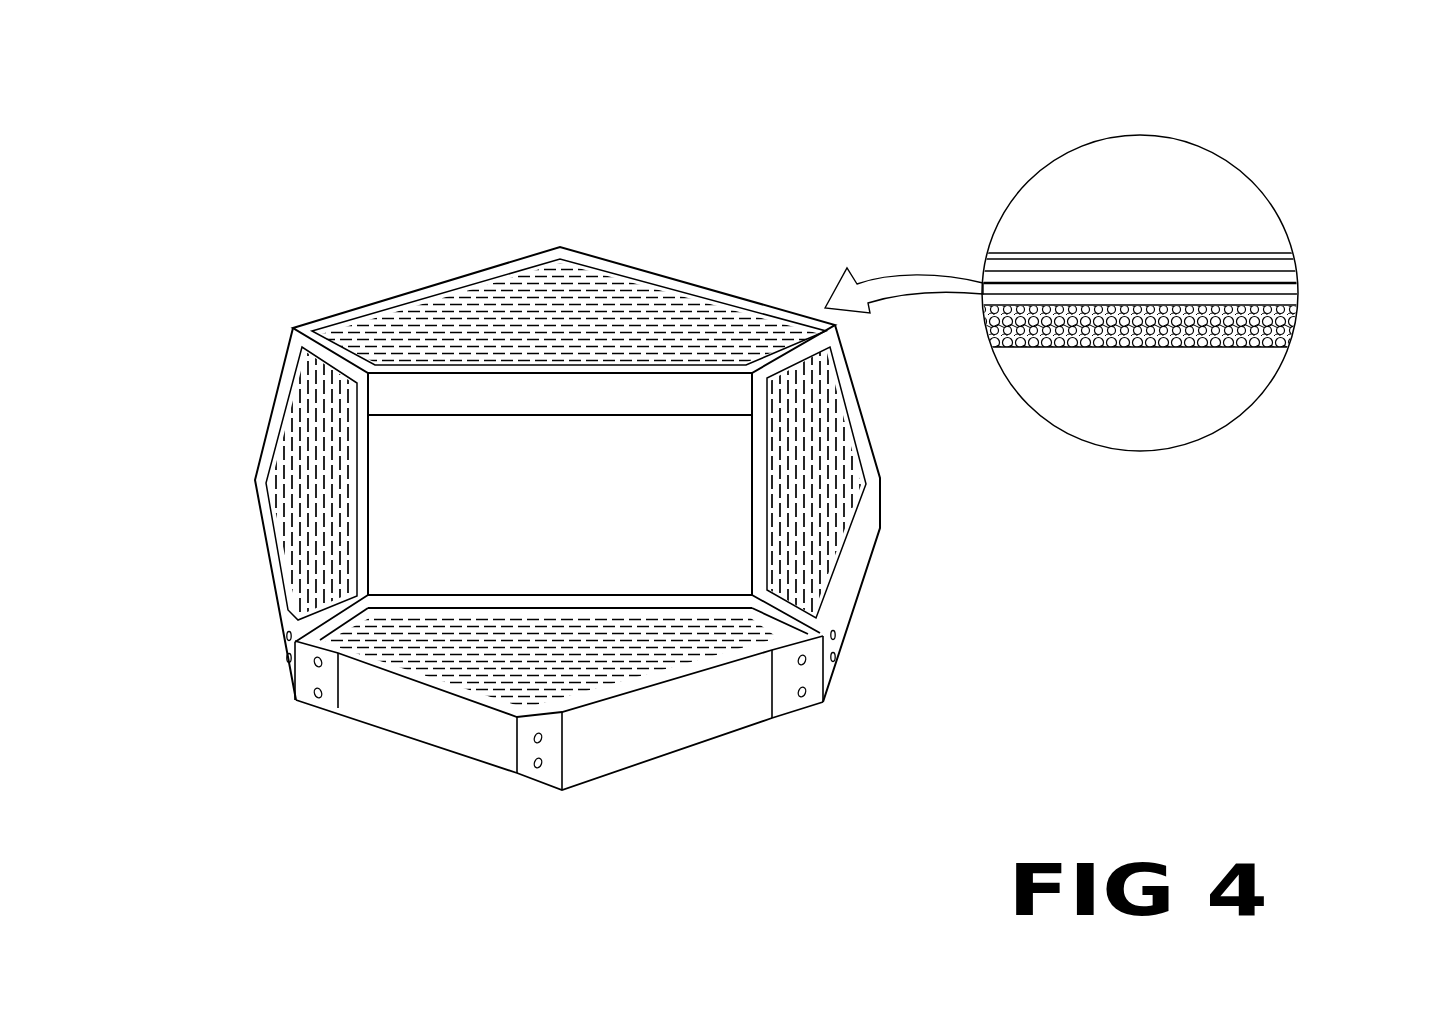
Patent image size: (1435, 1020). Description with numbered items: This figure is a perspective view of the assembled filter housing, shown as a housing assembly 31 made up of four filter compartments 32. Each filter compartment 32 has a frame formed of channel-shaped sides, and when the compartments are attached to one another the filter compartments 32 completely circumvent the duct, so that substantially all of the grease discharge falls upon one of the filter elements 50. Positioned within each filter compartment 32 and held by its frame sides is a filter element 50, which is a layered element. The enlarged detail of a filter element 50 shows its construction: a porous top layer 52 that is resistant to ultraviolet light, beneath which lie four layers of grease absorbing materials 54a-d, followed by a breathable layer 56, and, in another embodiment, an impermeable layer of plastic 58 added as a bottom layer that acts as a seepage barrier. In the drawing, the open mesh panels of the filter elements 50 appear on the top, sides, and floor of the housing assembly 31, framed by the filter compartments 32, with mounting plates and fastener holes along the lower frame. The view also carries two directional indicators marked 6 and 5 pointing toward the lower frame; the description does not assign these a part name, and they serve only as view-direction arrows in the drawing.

The housing assembly 31 is at (483, 207).
The filter compartment 32 is at (605, 257).
The filter element 50 is at (313, 400).
The top layer 52 is at (1095, 255).
The grease absorbing layers 54a-d is at (1233, 282).
The breathable layer 56 is at (1290, 318).
The impermeable layer of plastic 58 is at (1140, 347).
The viewing direction of FIG. 6 is at (329, 795).
The viewing direction of FIG. 5 is at (502, 873).